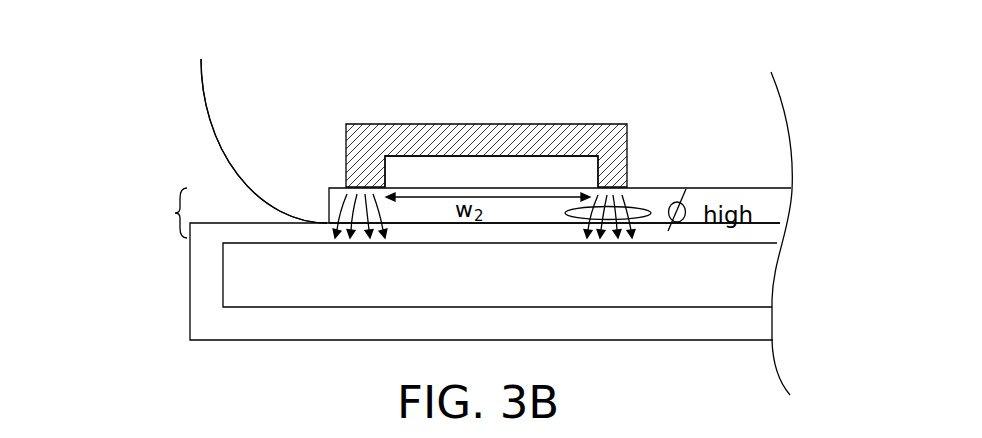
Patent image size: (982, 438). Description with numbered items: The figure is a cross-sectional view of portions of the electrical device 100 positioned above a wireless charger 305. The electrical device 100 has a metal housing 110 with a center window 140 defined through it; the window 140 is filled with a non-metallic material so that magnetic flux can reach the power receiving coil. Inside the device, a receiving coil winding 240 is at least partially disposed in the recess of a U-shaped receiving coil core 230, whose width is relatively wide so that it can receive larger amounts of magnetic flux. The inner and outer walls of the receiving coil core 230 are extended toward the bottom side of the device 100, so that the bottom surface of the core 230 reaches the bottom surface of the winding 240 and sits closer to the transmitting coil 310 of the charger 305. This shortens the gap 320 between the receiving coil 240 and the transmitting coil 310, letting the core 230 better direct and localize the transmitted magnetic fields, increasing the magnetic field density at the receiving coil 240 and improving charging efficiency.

The electrical device 100 is at (210, 117).
The housing 110 is at (223, 152).
The center window 140 is at (770, 203).
The receiving coil core 230 is at (377, 140).
The receiving coil winding 240 is at (498, 167).
The wireless charger 305 is at (635, 330).
The transmitting coil 310 is at (237, 292).
The gap 320 is at (138, 214).